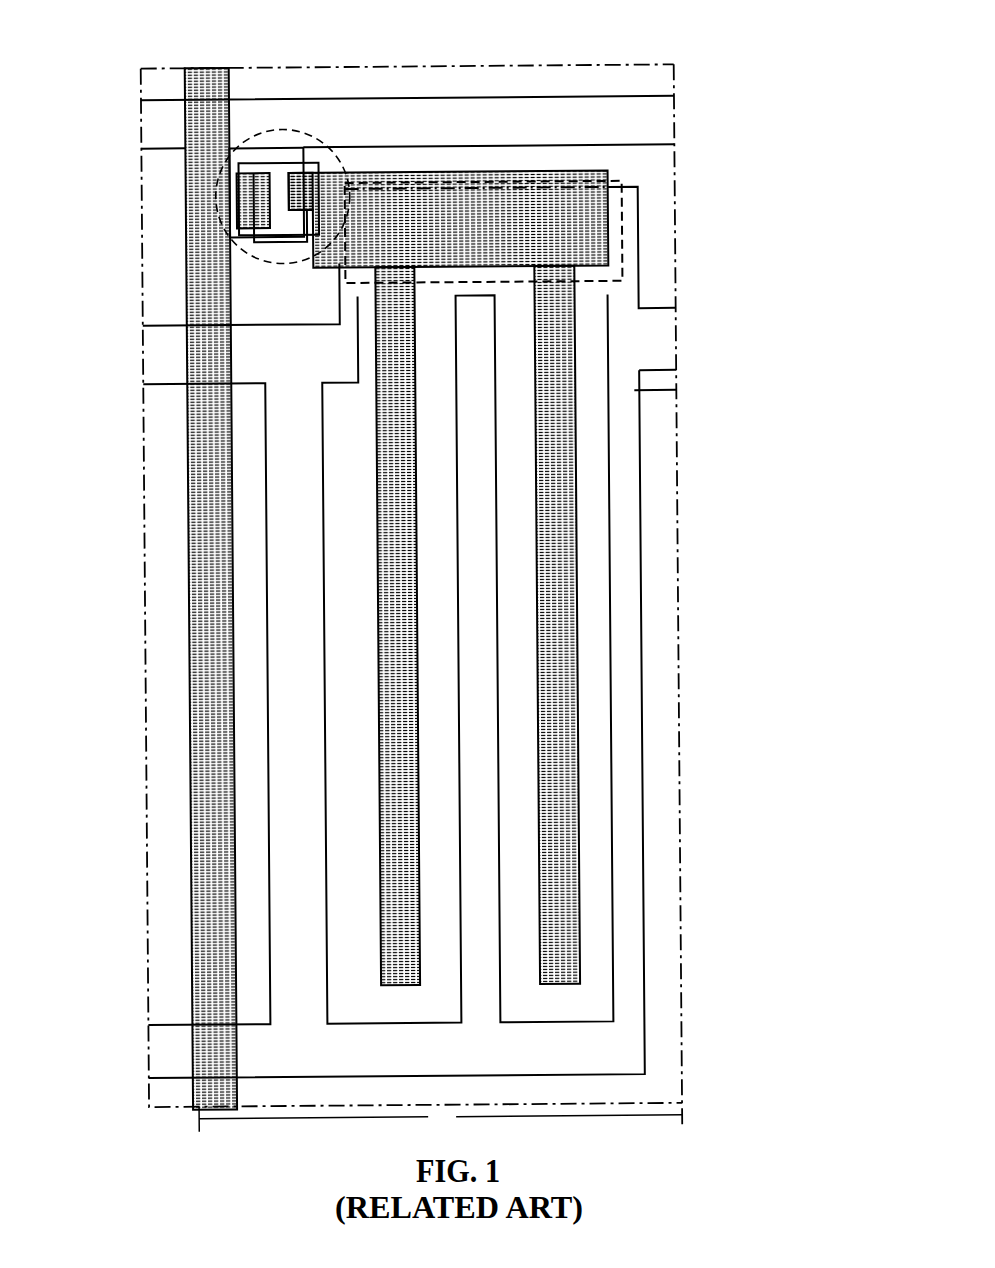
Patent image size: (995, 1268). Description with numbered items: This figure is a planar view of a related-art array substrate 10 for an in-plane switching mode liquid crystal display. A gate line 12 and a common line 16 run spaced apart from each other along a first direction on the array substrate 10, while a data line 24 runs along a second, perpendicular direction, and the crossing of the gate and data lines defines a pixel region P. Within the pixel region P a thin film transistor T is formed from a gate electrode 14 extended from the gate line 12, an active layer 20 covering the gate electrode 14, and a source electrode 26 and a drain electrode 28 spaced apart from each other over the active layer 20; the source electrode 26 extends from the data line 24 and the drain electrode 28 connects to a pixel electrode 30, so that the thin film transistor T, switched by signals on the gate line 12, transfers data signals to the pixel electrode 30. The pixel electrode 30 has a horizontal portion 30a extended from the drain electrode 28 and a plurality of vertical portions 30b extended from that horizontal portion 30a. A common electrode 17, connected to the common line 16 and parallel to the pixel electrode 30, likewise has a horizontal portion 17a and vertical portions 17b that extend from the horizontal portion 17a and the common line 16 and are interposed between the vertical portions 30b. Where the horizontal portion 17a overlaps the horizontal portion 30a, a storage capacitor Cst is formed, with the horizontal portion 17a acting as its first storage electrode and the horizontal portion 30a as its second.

The array substrate 10 is at (682, 968).
The gate line 12 is at (565, 97).
The gate electrode 14 is at (268, 245).
The common line 16 is at (648, 330).
The common electrode 17 is at (470, 629).
The horizontal portion of the common electrode 17a is at (633, 202).
The vertical portions of the common electrode 17b is at (633, 390).
The active layer 20 is at (283, 163).
The data line 24 is at (189, 441).
The source electrode 26 is at (264, 173).
The drain electrode 28 is at (314, 212).
The pixel electrode 30 is at (404, 578).
The horizontal portion of the pixel electrode 30a is at (612, 262).
The vertical portions of the pixel electrode 30b is at (577, 318).
The storage capacitor Cst is at (620, 232).
The thin film transistor T is at (296, 265).
The pixel region P is at (440, 1117).